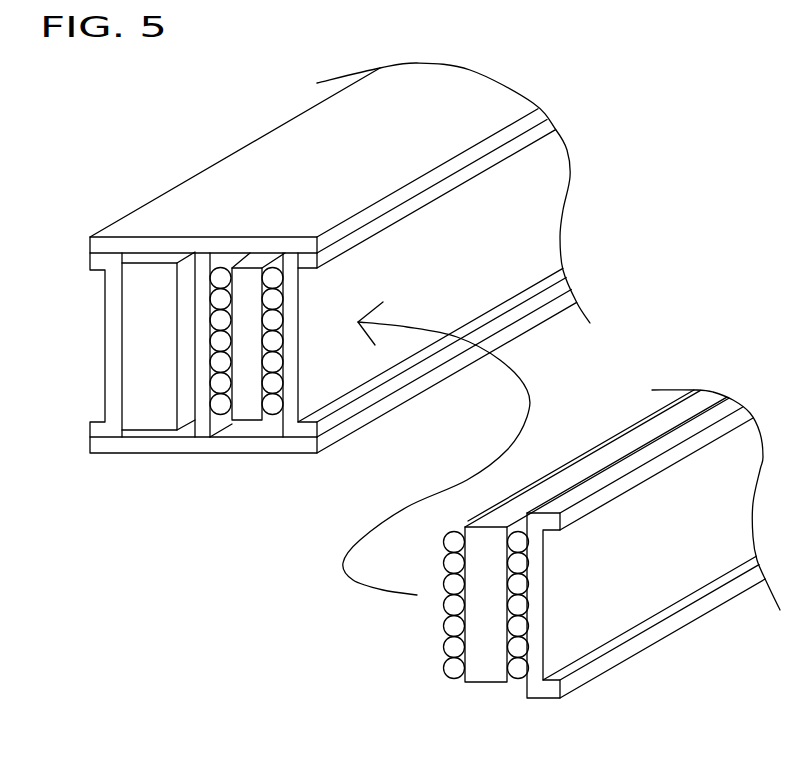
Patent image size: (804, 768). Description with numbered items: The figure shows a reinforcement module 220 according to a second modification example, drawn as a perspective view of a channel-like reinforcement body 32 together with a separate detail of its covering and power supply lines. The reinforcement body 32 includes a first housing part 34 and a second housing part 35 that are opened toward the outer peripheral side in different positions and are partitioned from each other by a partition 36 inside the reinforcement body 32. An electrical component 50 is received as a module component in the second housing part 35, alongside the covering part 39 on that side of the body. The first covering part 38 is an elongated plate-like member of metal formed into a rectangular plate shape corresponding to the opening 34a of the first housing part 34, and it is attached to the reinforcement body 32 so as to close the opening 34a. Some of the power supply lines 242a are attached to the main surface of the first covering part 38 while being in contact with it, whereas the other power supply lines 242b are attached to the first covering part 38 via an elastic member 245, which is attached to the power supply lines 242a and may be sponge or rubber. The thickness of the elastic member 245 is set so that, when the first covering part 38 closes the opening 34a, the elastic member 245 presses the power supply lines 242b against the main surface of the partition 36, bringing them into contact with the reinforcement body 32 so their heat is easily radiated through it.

The reinforcement module 220 is at (220, 125).
The reinforcement body 32 is at (170, 217).
The second housing part 35 is at (152, 432).
The covering part 39 is at (105, 395).
The electrical component 50 is at (127, 420).
The partition 36 is at (203, 423).
The first housing part 34 is at (253, 417).
The opening 34a is at (384, 390).
The first covering part 38 is at (333, 388).
The elastic member 245 is at (250, 417).
The power supply lines 242a is at (281, 318).
The power supply lines 242b is at (208, 295).